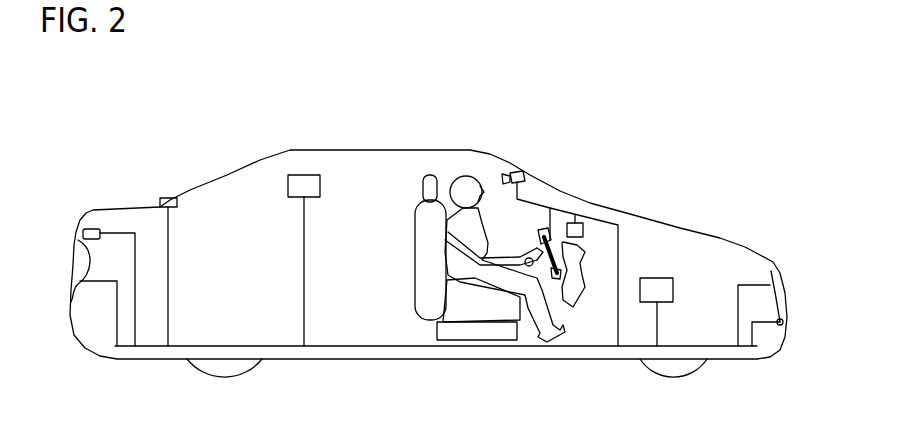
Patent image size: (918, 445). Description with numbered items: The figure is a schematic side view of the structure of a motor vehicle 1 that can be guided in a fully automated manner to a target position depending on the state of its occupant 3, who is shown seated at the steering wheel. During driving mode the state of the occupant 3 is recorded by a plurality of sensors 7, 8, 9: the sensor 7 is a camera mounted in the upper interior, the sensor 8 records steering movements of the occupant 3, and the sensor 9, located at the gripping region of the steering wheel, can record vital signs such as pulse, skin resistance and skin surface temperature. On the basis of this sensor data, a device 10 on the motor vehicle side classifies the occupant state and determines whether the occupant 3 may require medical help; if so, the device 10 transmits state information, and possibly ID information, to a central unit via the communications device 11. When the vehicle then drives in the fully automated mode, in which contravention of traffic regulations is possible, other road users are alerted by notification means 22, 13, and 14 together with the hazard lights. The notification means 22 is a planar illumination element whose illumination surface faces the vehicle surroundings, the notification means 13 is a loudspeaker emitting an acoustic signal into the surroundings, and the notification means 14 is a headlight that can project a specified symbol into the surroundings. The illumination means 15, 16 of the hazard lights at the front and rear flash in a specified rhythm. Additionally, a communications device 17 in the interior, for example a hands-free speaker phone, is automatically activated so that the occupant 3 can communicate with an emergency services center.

The motor vehicle 1 is at (376, 118).
The occupant 3 is at (461, 178).
The sensor 7 is at (515, 172).
The sensor 8 is at (562, 317).
The sensor 9 is at (538, 233).
The device 10 is at (653, 277).
The communications device 11 is at (298, 173).
The notification means 13 is at (92, 228).
The notification means 14 is at (772, 273).
The illumination means 15 is at (76, 283).
The illumination means 16 is at (780, 326).
The communications device 17 is at (583, 236).
The notification means 22 is at (177, 202).